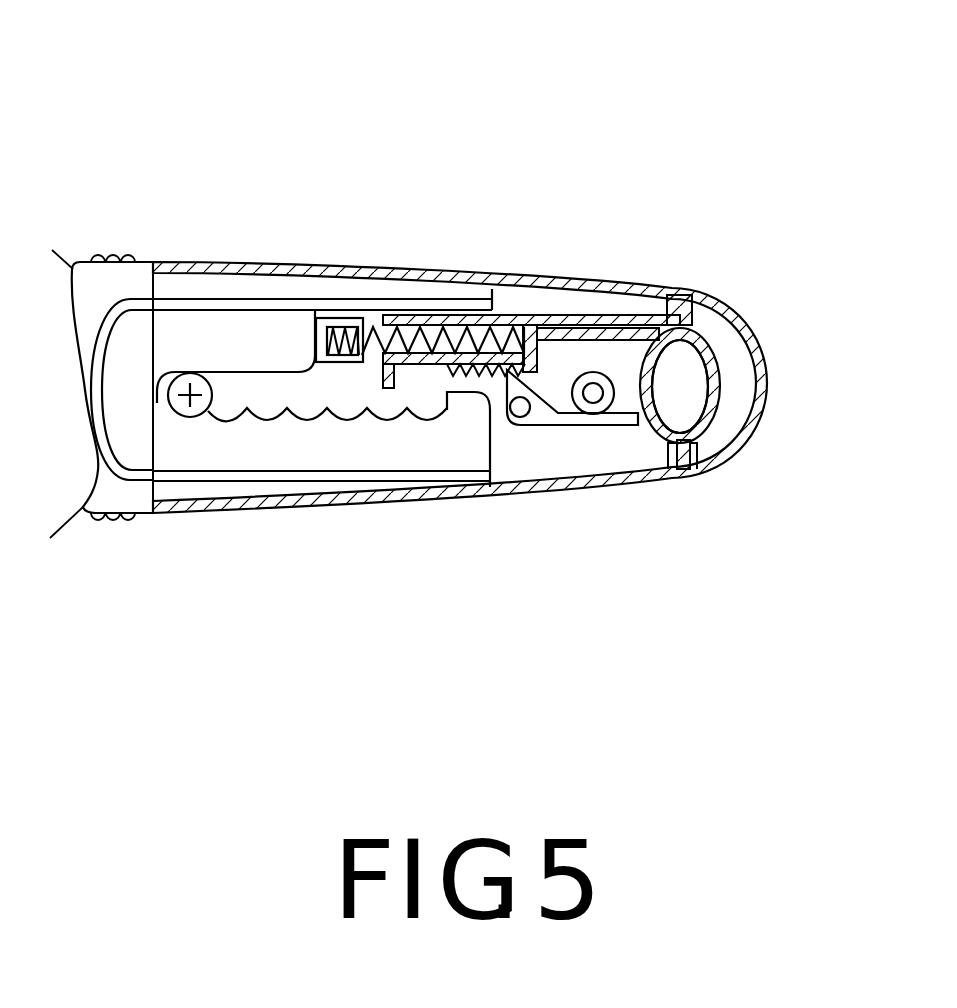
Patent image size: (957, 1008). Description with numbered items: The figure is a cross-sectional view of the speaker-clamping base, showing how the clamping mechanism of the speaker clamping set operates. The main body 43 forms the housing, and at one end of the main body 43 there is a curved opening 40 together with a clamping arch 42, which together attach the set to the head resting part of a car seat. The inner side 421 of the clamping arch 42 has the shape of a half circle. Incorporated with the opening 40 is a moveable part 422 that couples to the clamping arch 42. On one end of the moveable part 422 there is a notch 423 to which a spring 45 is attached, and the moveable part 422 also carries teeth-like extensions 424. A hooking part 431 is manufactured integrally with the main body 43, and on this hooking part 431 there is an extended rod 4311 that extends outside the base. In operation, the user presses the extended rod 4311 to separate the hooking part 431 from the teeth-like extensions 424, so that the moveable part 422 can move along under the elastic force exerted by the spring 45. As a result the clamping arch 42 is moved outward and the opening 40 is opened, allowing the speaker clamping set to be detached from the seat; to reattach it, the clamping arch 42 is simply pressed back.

The curved opening 40 is at (658, 388).
The clamping arch 42 is at (752, 438).
The main body 43 is at (257, 263).
The spring 45 is at (367, 332).
The inner side 421 is at (713, 367).
The moveable part 422 is at (583, 320).
The notch 423 is at (455, 334).
The teeth-like extensions 424 is at (466, 373).
The hooking part 431 is at (577, 424).
The extended rod 4311 is at (506, 420).